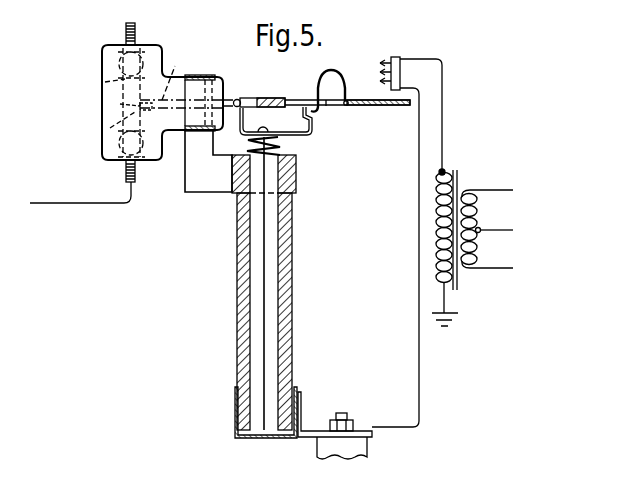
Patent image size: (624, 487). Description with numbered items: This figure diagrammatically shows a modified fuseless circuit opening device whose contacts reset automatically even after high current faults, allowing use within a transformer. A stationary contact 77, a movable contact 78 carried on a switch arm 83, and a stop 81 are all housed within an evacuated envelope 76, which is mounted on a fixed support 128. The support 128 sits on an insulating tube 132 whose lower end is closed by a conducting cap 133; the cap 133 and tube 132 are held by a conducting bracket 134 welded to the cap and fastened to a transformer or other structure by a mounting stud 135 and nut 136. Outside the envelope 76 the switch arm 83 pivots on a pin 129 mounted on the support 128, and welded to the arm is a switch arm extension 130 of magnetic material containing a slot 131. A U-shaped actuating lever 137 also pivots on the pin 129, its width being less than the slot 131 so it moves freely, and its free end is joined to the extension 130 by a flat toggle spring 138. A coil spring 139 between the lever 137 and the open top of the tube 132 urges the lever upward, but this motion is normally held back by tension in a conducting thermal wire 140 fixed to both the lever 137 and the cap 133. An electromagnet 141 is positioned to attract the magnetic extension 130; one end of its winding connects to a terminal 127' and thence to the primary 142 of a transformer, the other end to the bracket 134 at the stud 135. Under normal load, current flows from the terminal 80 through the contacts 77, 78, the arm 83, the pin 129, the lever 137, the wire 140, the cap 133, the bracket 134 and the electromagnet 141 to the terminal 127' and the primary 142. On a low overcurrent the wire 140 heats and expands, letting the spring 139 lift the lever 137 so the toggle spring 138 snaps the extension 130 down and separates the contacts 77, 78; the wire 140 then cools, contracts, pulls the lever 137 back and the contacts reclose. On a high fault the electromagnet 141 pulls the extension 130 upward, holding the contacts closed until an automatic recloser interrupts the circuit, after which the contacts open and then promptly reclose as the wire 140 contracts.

The evacuated envelope 76 is at (106, 47).
The stationary contact 77 is at (110, 128).
The movable contact 78 is at (120, 104).
The terminal 80 is at (134, 178).
The stop 81 is at (105, 82).
The switch arm 83 is at (177, 73).
The terminal 127' is at (474, 214).
The fixed support 128 is at (203, 193).
The pivot pin 129 is at (238, 99).
The switch arm extension 130 is at (372, 106).
The slot 131 is at (328, 105).
The insulating tube 132 is at (240, 297).
The conducting cap 133 is at (235, 411).
The conducting bracket 134 is at (312, 430).
The mounting stud 135 is at (346, 415).
The nut 136 is at (353, 426).
The actuating lever 137 is at (305, 135).
The toggle spring 138 is at (329, 71).
The coil spring 139 is at (283, 153).
The thermal wire 140 is at (266, 290).
The electromagnet 141 is at (401, 58).
The primary of a transformer 142 is at (450, 290).